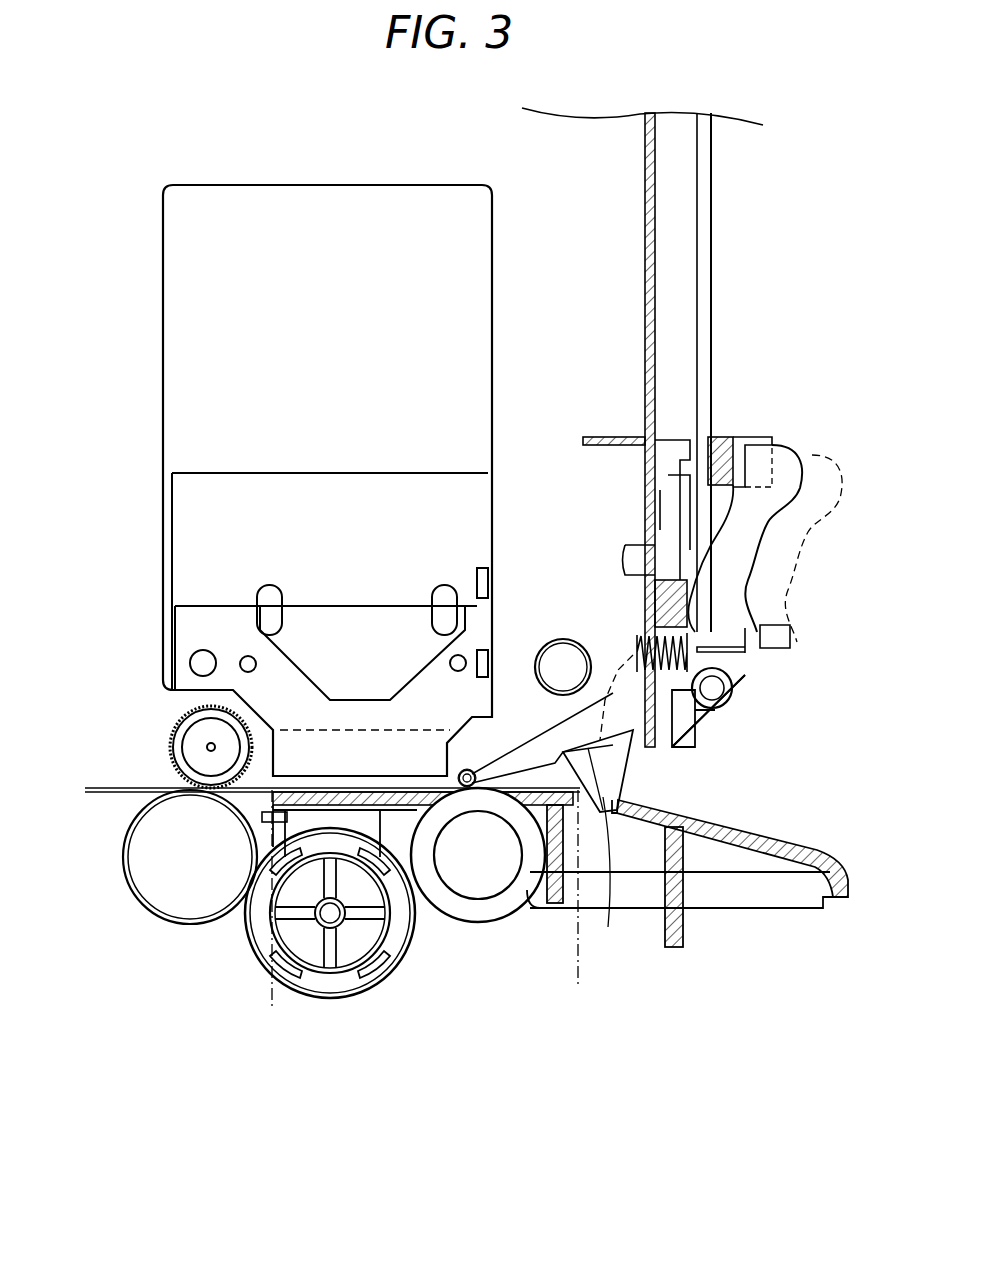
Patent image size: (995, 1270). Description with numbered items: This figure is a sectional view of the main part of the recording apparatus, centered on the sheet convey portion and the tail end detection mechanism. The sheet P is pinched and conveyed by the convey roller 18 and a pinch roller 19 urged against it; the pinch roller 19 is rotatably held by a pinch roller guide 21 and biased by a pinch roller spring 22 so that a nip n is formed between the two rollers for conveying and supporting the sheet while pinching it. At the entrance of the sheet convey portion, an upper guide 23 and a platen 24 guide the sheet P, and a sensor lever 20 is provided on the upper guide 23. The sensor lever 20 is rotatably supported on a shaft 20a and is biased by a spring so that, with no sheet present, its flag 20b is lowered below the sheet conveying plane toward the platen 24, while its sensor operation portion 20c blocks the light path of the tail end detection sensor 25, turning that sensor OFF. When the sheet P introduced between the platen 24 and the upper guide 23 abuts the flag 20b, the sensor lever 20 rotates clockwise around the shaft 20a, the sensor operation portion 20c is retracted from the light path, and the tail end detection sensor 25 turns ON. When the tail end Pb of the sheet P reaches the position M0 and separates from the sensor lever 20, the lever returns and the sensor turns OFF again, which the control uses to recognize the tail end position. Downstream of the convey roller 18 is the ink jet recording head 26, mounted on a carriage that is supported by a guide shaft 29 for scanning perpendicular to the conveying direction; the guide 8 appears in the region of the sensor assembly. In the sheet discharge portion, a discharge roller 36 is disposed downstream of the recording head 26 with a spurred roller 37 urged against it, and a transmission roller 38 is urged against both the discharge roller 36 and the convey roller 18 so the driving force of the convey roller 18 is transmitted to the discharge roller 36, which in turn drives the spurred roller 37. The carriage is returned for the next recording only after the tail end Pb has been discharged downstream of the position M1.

The guide member 8 is at (705, 242).
The convey roller 18 is at (478, 918).
The pinch roller 19 is at (470, 772).
The sensor lever 20 is at (803, 547).
The shaft 20a is at (735, 690).
The flag 20b is at (618, 675).
The sensor operation portion 20c is at (783, 450).
The pinch roller guide 21 is at (575, 725).
The pinch roller spring 22 is at (637, 640).
The upper guide 23 is at (695, 730).
The platen 24 is at (398, 828).
The tail end detection sensor 25 is at (733, 440).
The ink jet recording head 26 is at (168, 392).
The guide shaft 29 is at (548, 642).
The discharge roller 36 is at (132, 862).
The spurred roller 37 is at (190, 745).
The transmission roller 38 is at (345, 998).
The sheet P is at (150, 786).
The tail end Pb is at (617, 877).
The position M0 is at (576, 903).
The position M1 is at (272, 912).
The nip n is at (458, 775).